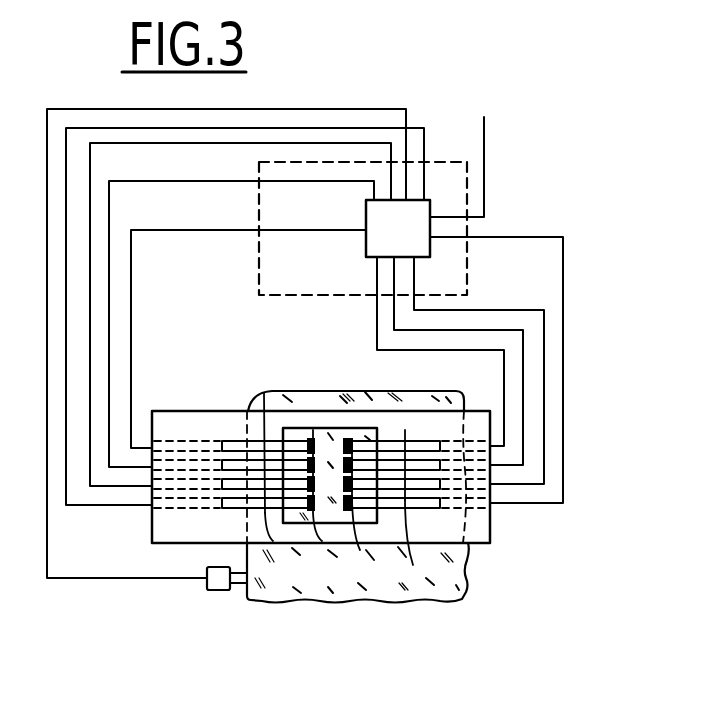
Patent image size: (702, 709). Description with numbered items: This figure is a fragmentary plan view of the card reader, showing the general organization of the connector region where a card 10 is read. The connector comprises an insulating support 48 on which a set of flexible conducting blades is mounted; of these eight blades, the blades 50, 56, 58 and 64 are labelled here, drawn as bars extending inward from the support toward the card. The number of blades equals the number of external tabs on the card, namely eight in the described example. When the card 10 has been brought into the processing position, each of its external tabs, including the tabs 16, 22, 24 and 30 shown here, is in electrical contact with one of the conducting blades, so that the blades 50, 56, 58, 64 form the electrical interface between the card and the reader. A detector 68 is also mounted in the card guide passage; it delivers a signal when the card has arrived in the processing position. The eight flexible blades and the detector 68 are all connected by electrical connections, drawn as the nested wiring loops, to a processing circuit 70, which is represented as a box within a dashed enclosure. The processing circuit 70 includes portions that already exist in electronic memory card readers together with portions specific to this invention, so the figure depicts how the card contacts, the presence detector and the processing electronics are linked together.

The card 10 is at (463, 600).
The external tab 16 is at (313, 430).
The external tab 22 is at (322, 541).
The external tab 24 is at (352, 440).
The external tab 30 is at (360, 550).
The insulating support 48 is at (160, 528).
The flexible conducting blade 50 is at (264, 393).
The flexible conducting blade 56 is at (273, 541).
The flexible conducting blade 58 is at (405, 430).
The flexible conducting blade 64 is at (413, 565).
The detector 68 is at (216, 593).
The processing circuit 70 is at (445, 150).